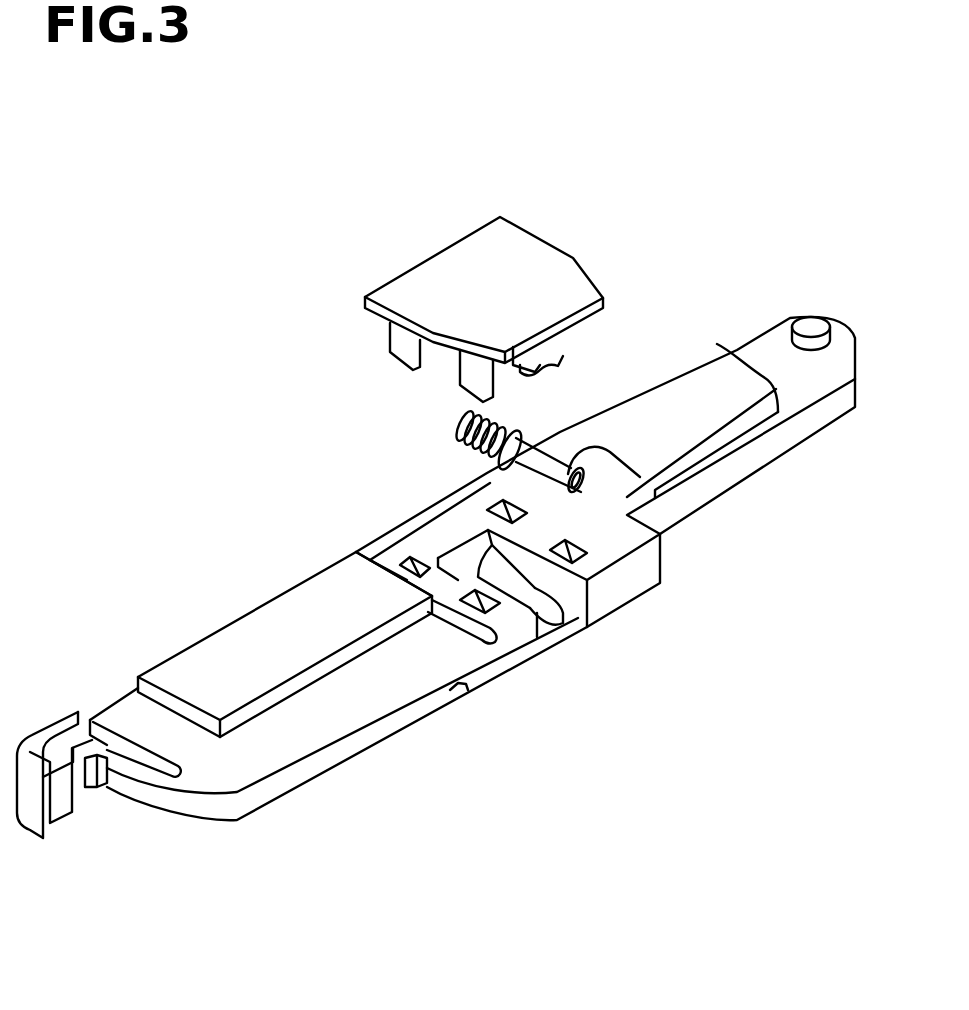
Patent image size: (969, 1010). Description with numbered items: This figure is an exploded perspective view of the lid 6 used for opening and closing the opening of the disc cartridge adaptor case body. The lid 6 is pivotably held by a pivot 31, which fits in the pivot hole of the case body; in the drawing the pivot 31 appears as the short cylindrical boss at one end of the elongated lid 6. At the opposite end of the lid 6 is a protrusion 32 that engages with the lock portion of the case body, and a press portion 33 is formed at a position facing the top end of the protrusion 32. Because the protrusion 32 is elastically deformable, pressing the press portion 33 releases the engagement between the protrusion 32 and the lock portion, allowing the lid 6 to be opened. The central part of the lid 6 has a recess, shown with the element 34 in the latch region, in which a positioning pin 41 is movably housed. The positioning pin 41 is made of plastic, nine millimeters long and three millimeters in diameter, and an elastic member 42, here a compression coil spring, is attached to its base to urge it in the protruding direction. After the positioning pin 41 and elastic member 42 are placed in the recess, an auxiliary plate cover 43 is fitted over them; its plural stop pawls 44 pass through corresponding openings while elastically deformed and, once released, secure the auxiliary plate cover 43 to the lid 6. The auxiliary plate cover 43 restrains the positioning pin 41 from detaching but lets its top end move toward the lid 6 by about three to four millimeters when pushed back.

The lid 6 is at (205, 637).
The pivot 31 is at (795, 316).
The protrusion 32 is at (90, 790).
The press portion 33 is at (30, 825).
The latch claw 34 is at (525, 610).
The positioning pin 41 is at (655, 495).
The elastic member 42 is at (462, 436).
The auxiliary plate cover 43 is at (425, 255).
The stop pawls 44 is at (398, 357).